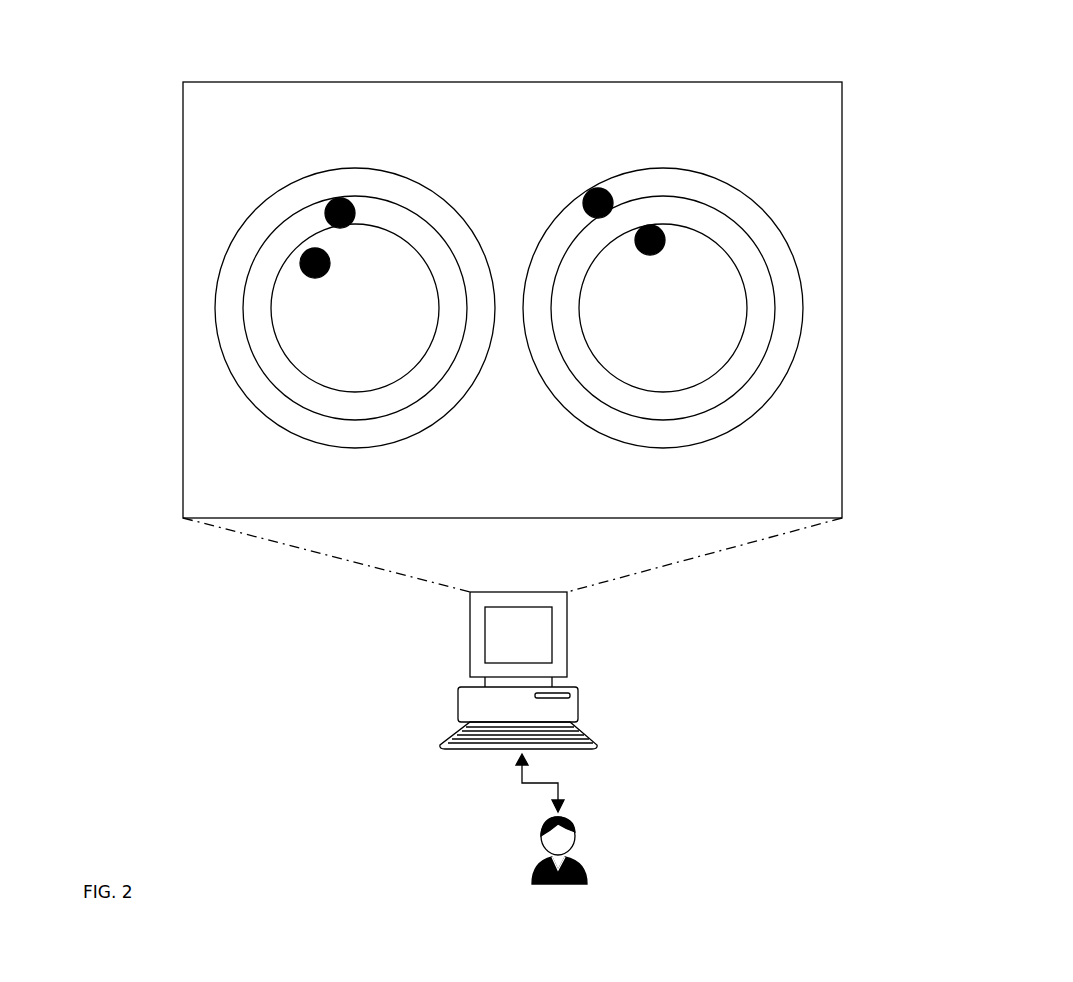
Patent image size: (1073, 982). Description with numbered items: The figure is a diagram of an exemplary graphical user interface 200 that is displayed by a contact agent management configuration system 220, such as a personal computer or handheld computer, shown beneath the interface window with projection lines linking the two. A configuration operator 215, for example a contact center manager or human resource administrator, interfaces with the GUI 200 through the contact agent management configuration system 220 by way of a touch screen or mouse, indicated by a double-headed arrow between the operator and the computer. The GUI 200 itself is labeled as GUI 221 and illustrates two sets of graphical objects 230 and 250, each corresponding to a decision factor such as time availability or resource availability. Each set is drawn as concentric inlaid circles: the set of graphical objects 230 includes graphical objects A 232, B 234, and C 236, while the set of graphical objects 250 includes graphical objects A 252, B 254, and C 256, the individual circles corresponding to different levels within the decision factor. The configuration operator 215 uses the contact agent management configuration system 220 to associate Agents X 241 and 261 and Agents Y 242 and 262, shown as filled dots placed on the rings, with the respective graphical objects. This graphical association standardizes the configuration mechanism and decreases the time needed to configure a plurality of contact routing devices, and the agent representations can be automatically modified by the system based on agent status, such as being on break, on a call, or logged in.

The graphical user interface 200 is at (530, 283).
The GUI 221 is at (513, 82).
The set of graphical objects 230 is at (266, 331).
The graphical object A 232 is at (215, 308).
The graphical object B 234 is at (260, 372).
The graphical object C 236 is at (337, 392).
The Agent X 241 is at (314, 248).
The Agent Y 242 is at (341, 198).
The set of graphical objects 250 is at (745, 319).
The graphical object A 252 is at (800, 282).
The graphical object B 254 is at (767, 355).
The graphical object C 256 is at (718, 375).
The Agent X 261 is at (590, 190).
The Agent Y 262 is at (655, 225).
The contact agent management configuration system 220 is at (570, 663).
The configuration operator 215 is at (520, 852).